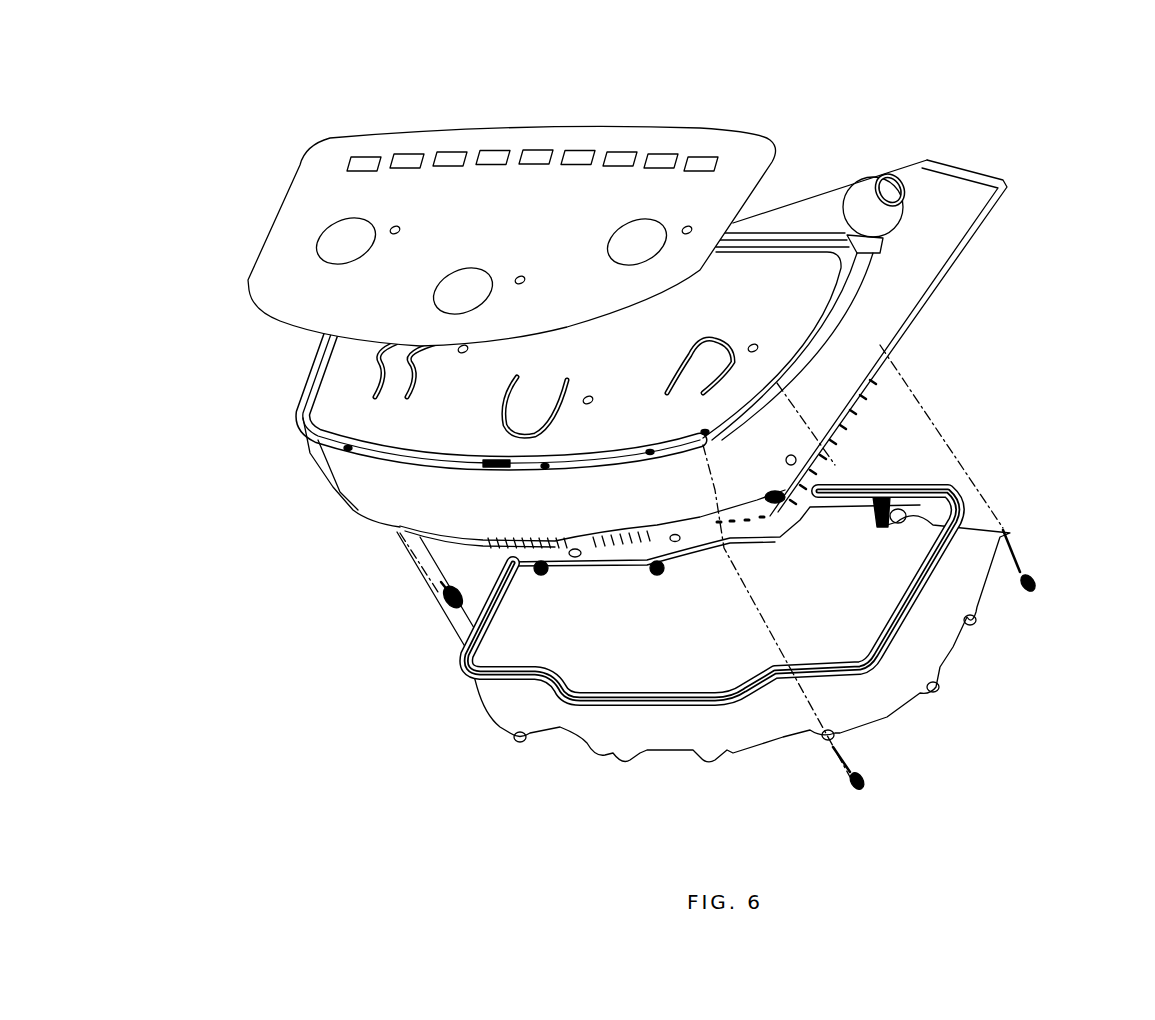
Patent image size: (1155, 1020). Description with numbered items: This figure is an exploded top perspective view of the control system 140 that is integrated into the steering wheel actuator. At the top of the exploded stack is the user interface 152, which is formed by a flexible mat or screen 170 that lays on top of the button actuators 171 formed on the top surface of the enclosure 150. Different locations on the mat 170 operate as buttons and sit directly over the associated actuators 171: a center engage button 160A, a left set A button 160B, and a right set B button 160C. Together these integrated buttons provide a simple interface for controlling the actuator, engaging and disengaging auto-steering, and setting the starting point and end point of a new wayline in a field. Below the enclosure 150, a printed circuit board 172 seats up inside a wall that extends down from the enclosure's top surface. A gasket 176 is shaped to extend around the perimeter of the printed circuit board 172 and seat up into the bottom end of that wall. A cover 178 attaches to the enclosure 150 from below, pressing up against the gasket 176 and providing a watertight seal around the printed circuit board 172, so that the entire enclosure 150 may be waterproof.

The control system 140 is at (925, 92).
The enclosure 150 is at (891, 291).
The user interface 152 is at (415, 62).
The center engage button 160A is at (437, 298).
The left set A button 160B is at (316, 241).
The right set B button 160C is at (630, 230).
The flexible mat or screen 170 is at (307, 190).
The button actuators 171 is at (503, 420).
The printed circuit board (PCB) 172 is at (487, 567).
The gasket 176 is at (937, 480).
The cover 178 is at (1003, 528).